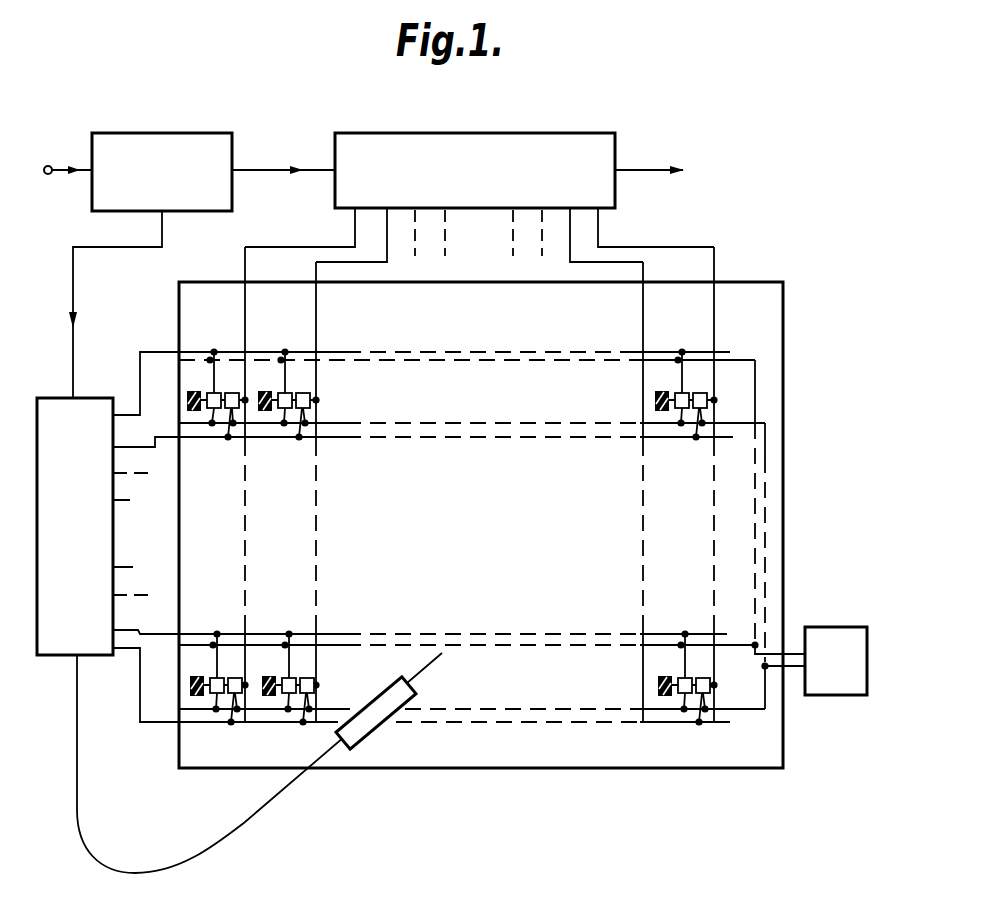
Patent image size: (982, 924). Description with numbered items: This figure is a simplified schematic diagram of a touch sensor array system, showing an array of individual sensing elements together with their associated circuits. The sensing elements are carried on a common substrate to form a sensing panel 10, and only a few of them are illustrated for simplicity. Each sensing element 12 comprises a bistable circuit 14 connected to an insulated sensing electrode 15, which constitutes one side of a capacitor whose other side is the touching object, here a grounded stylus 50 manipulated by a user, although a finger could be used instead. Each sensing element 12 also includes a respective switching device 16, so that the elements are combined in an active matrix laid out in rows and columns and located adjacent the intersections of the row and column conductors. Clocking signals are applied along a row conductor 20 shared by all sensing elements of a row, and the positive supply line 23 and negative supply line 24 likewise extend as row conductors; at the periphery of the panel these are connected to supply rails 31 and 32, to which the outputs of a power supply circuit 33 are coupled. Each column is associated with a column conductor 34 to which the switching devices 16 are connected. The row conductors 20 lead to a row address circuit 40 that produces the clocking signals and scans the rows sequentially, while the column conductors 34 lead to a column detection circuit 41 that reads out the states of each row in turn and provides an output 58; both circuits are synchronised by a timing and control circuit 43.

The sensing panel 10 is at (783, 437).
The sensing element 12 is at (461, 531).
The bistable circuit 14 is at (210, 427).
The sensing electrode 15 is at (187, 392).
The switching device 16 is at (242, 406).
The row conductor 20 is at (262, 351).
The positive supply line 23 is at (343, 362).
The negative supply line 24 is at (340, 424).
The supply rail 31 is at (756, 404).
The supply rail 32 is at (765, 457).
The power supply circuit 33 is at (850, 676).
The column conductor 34 is at (248, 314).
The row address circuit 40 is at (88, 537).
The column detection circuit 41 is at (488, 187).
The timing and control circuit 43 is at (174, 187).
The grounded stylus 50 is at (393, 718).
The output 58 is at (663, 172).